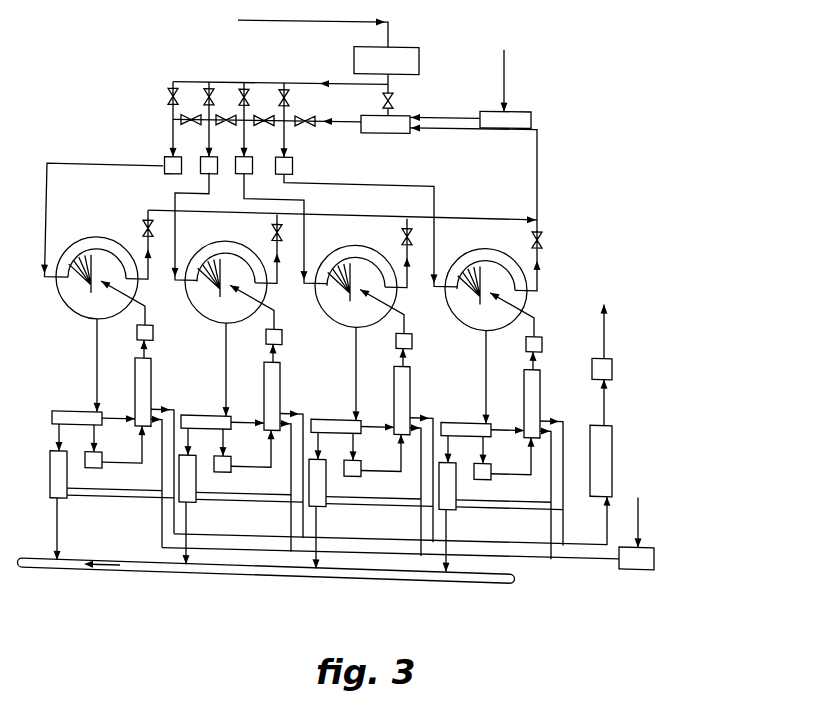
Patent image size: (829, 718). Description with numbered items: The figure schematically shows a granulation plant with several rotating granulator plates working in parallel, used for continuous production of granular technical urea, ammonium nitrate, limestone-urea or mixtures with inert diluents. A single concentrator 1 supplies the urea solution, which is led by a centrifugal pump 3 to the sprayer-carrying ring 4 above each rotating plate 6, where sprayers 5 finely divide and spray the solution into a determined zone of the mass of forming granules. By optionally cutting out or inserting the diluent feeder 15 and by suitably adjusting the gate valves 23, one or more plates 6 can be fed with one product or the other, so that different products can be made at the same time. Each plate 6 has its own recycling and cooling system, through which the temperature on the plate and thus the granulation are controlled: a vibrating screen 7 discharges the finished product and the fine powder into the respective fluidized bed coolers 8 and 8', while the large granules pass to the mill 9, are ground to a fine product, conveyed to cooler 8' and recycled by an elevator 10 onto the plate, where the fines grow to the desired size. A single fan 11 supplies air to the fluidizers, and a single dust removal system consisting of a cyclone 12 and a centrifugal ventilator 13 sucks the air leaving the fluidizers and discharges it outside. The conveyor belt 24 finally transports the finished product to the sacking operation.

The concentrator 1 is at (419, 66).
The centrifugal pump 3 is at (165, 158).
The sprayer-carrying ring 4 is at (100, 256).
The sprayers 5 is at (276, 288).
The rotating plate 6 is at (119, 250).
The vibrating screen 7 is at (59, 417).
The fluidized bed cooler 8 is at (306, 499).
The fluidized bed cooler 8' is at (336, 449).
The mill 9 is at (102, 458).
The elevator 10 is at (153, 337).
The fan 11 is at (652, 561).
The cyclone 12 is at (612, 440).
The centrifugal ventilator 13 is at (612, 361).
The diluent feeder 15 is at (533, 121).
The gate valves 23 is at (302, 118).
The conveyor belt 24 is at (268, 576).